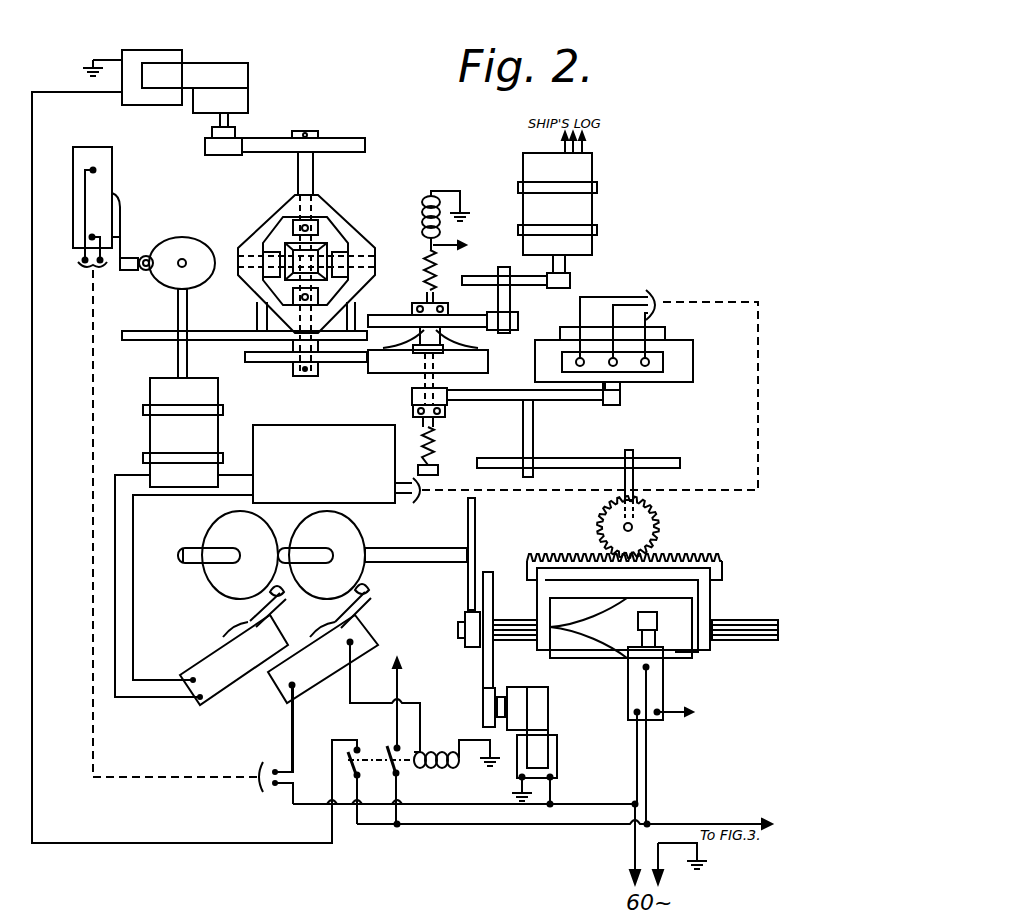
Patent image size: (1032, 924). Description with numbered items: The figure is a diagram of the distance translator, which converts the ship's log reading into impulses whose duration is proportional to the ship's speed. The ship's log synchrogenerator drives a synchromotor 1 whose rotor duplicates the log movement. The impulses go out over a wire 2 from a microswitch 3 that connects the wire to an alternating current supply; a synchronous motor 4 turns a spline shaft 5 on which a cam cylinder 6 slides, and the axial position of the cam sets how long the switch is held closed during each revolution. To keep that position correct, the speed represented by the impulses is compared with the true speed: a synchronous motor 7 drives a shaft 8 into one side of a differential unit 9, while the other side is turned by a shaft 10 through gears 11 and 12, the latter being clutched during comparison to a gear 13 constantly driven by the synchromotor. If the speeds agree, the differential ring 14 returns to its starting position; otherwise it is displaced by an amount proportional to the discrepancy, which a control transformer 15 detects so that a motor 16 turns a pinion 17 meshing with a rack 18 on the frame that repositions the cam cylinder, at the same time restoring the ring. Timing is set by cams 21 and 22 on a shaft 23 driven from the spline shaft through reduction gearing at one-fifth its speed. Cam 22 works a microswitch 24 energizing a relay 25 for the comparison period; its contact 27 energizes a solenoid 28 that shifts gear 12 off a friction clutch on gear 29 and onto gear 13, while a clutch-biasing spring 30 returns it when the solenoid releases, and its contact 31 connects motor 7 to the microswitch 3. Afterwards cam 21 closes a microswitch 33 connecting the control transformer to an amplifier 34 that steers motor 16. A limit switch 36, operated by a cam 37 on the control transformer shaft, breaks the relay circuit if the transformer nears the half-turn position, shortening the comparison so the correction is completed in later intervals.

The synchromotor 1 is at (587, 208).
The wire 2 is at (732, 820).
The microswitch 3 is at (657, 718).
The synchronous motor 4 is at (557, 765).
The spline shaft 5 is at (742, 635).
The cam cylinder 6 is at (685, 657).
The synchronous motor 7 is at (207, 72).
The shaft 8 is at (298, 182).
The differential unit 9 is at (342, 227).
The shaft 10 is at (302, 373).
The gear 11 is at (338, 362).
The gear 12 is at (488, 366).
The gear 13 is at (393, 320).
The differential ring 14 is at (258, 328).
The control transformer 15 is at (152, 387).
The motor 16 is at (693, 373).
The pinion 17 is at (655, 523).
The rack 18 is at (687, 555).
The cam 21 is at (207, 532).
The cam 22 is at (342, 540).
The shaft 23 is at (422, 560).
The microswitch 24 is at (363, 630).
The relay 25 is at (427, 772).
The contact 27 is at (378, 745).
The solenoid 28 is at (420, 224).
The gear 29 is at (412, 400).
The clutch-biasing spring 30 is at (433, 442).
The contact 31 is at (360, 765).
The microswitch 33 is at (273, 640).
The amplifier 34 is at (353, 418).
The limit switch 36 is at (93, 155).
The cam 37 is at (170, 277).